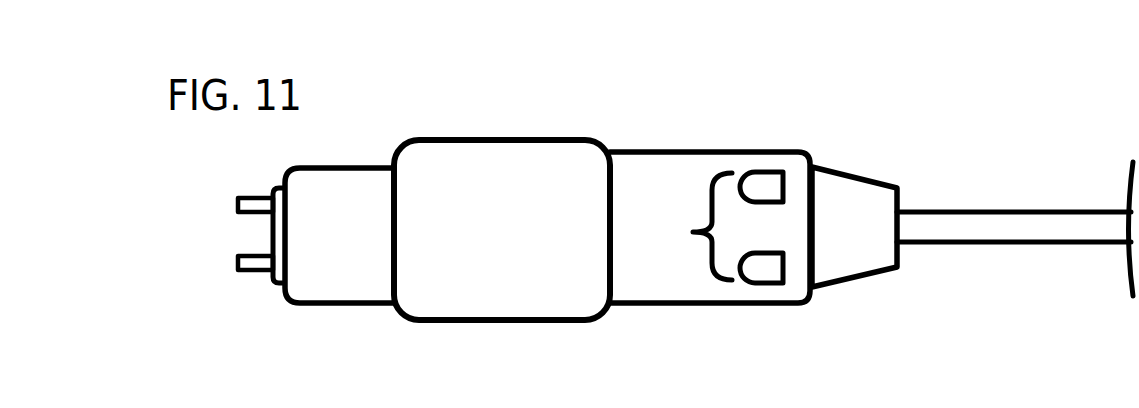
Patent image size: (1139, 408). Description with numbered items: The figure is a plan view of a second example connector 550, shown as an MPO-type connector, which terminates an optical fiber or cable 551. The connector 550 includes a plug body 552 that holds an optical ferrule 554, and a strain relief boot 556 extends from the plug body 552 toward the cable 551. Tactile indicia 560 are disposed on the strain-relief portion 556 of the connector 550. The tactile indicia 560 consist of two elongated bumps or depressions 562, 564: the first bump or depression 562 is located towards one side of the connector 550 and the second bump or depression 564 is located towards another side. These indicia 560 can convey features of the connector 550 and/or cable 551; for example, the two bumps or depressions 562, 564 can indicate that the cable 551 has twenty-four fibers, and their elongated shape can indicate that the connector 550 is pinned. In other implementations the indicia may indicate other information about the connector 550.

The connector 550 is at (680, 119).
The optical fiber or cable 551 is at (967, 212).
The plug body 552 is at (478, 138).
The optical ferrule 554 is at (270, 230).
The strain relief boot 556 is at (792, 150).
The tactile indicia 560 is at (687, 226).
The first bump or depression 562 is at (783, 184).
The second bump or depression 564 is at (783, 270).